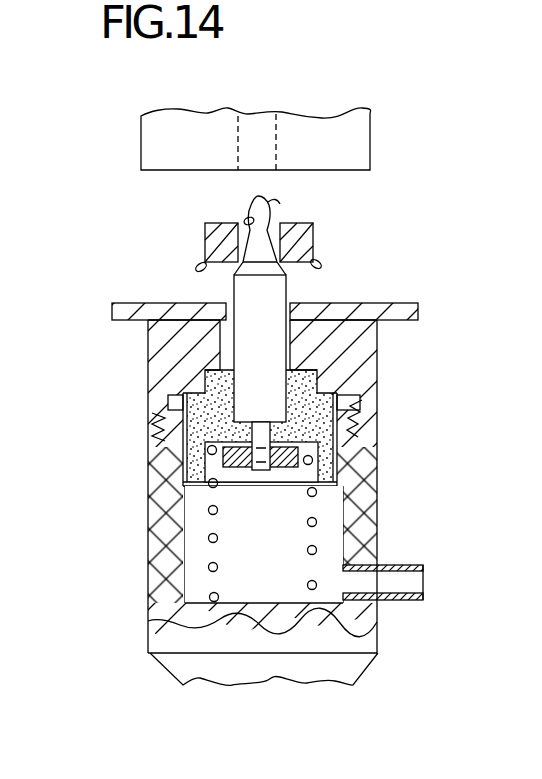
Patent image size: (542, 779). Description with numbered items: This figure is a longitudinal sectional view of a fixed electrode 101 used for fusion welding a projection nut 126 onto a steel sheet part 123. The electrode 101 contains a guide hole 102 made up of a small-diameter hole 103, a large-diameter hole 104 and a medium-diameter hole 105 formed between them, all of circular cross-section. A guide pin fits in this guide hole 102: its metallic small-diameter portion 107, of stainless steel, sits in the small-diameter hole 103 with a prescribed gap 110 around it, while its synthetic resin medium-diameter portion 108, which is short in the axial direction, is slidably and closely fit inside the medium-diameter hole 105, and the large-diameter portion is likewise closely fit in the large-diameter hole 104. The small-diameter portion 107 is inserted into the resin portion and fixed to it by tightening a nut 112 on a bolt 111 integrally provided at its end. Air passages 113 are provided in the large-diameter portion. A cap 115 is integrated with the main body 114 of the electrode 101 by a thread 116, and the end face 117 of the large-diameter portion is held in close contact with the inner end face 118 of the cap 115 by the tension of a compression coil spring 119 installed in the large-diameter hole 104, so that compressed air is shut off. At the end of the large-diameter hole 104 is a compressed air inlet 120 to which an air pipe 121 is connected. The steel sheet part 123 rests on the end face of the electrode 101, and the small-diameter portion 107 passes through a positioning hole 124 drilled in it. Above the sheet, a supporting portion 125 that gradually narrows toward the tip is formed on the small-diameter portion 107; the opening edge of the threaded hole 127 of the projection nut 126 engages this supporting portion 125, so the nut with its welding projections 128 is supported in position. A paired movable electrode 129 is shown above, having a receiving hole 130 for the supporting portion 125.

The electrode 101 is at (432, 440).
The guide hole 102 is at (168, 505).
The small-diameter hole 103 is at (300, 346).
The large-diameter hole 104 is at (340, 515).
The medium-diameter hole 105 is at (168, 400).
The small-diameter portion 107 is at (232, 286).
The medium-diameter portion 108 is at (310, 384).
The gap 110 is at (248, 486).
The bolt 111 is at (262, 470).
The nut 112 is at (256, 470).
The air passages 113 is at (185, 470).
The main body 114 is at (160, 612).
The cap 115 is at (185, 393).
The thread 116 is at (155, 436).
The end face 117 is at (215, 382).
The inner end face 118 is at (348, 404).
The compression coil spring 119 is at (208, 537).
The compressed air inlet 120 is at (343, 490).
The air pipe 121 is at (413, 602).
The steel sheet part 123 is at (400, 301).
The positioning hole 124 is at (210, 301).
The supporting portion 125 is at (268, 208).
The projection nut 126 is at (182, 238).
The threaded hole 127 is at (238, 217).
The projections 128 is at (318, 256).
The electrode 129 is at (215, 109).
The receiving hole 130 is at (276, 120).